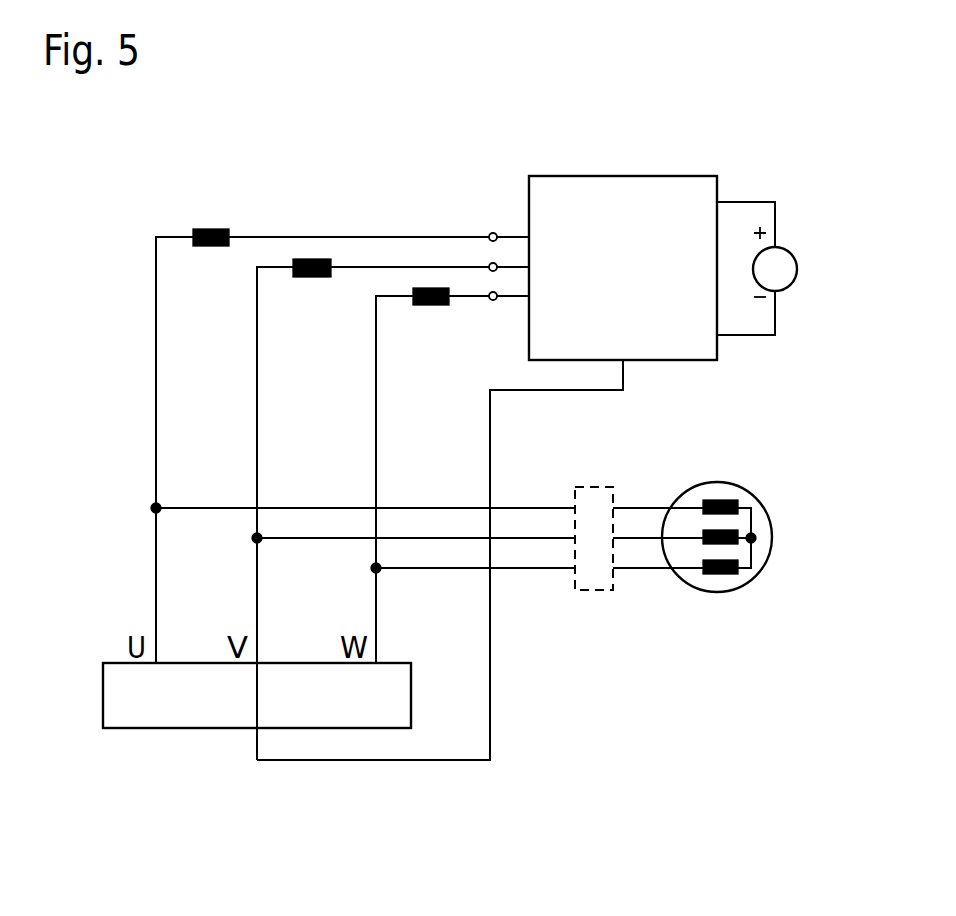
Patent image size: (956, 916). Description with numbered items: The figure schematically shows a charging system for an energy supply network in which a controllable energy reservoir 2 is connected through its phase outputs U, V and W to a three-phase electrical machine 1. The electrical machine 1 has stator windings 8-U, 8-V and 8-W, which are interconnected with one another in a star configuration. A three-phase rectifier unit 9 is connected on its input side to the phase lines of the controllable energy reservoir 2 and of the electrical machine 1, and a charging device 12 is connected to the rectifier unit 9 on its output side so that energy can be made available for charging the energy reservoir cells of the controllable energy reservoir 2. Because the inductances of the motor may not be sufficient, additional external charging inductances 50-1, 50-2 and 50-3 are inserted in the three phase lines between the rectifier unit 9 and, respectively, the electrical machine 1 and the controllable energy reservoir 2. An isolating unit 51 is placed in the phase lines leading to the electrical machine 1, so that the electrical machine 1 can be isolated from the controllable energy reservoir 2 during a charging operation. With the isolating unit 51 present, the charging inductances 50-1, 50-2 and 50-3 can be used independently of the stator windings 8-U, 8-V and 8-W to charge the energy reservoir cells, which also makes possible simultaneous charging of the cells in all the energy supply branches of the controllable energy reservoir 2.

The three-phase electrical machine 1 is at (722, 539).
The controllable energy reservoir 2 is at (411, 693).
The rectifier unit 9 is at (624, 185).
The charging device 12 is at (790, 270).
The charging inductance 50-1 is at (212, 229).
The charging inductance 50-2 is at (313, 259).
The charging inductance 50-3 is at (428, 288).
The isolating unit 51 is at (595, 500).
The stator winding 8-U is at (720, 500).
The stator winding 8-V is at (703, 537).
The stator winding 8-W is at (722, 578).